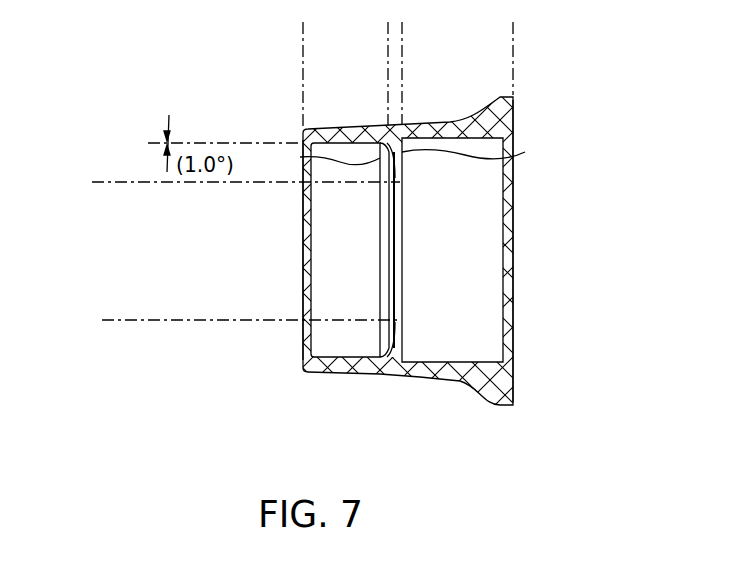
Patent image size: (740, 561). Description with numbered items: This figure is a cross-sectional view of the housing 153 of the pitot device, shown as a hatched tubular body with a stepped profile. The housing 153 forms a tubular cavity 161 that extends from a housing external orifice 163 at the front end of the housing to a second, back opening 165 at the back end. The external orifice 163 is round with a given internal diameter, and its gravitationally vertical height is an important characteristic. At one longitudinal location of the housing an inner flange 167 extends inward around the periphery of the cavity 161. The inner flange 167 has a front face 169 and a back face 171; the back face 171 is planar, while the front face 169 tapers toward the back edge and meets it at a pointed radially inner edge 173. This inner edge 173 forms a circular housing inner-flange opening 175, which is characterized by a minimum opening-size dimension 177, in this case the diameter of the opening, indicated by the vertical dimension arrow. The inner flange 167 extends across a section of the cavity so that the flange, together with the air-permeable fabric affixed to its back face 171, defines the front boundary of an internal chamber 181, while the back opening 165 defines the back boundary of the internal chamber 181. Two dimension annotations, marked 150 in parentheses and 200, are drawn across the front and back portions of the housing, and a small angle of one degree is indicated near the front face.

The housing 153 is at (590, 214).
The tubular cavity 161 is at (325, 228).
The housing external orifice 163 is at (304, 280).
The back opening 165 is at (515, 312).
The inner flange 167 is at (394, 340).
The front face 169 is at (312, 163).
The back face 171 is at (489, 152).
The radially inner edge 173 is at (395, 178).
The housing inner-flange opening 175 is at (403, 254).
The minimum opening-size dimension 177 is at (118, 185).
The internal chamber 181 is at (490, 347).
The first dimension 150 is at (403, 42).
The second dimension 200 is at (512, 42).